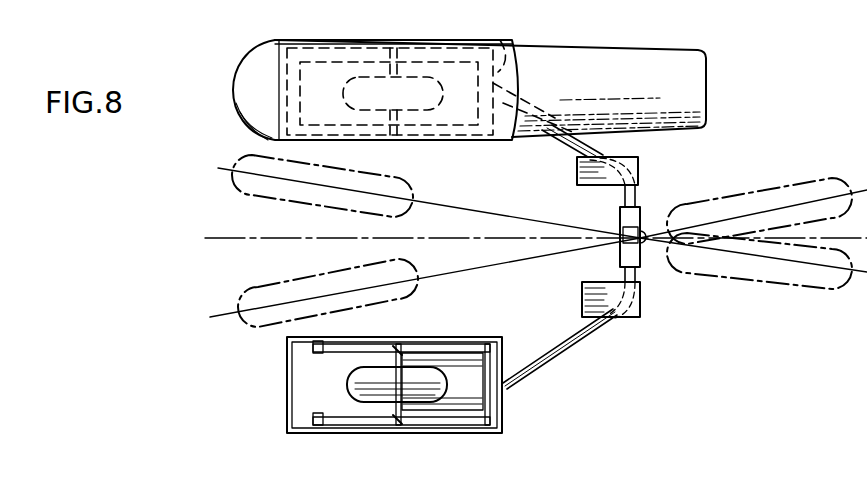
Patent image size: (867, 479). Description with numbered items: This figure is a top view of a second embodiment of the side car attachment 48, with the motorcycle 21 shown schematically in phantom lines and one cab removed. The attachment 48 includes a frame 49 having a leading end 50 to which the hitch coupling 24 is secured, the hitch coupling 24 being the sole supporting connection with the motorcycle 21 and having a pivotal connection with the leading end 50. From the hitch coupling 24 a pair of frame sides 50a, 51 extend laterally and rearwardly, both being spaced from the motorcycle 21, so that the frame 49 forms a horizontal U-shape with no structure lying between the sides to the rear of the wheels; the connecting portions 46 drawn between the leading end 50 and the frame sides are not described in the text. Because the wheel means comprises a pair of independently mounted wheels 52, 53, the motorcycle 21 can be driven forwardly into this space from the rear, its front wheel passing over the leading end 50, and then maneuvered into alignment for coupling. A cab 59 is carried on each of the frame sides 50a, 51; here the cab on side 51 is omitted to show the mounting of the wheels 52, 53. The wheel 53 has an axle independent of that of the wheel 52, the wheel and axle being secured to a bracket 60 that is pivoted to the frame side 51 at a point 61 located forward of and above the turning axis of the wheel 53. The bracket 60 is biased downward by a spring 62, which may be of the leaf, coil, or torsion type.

The motorcycle 21 is at (237, 238).
The hitch coupling 24 is at (645, 236).
The connector blocks 46 is at (577, 172).
The side car attachment 48 is at (557, 362).
The frame 49 is at (590, 334).
The leading end 50 is at (640, 272).
The frame side 50a is at (503, 40).
The frame side 51 is at (507, 405).
The wheel 52 is at (365, 78).
The wheel 53 is at (370, 392).
The cab 59 is at (592, 55).
The bracket 60 is at (453, 410).
The pivot point 61 is at (490, 428).
The spring 62 is at (340, 348).